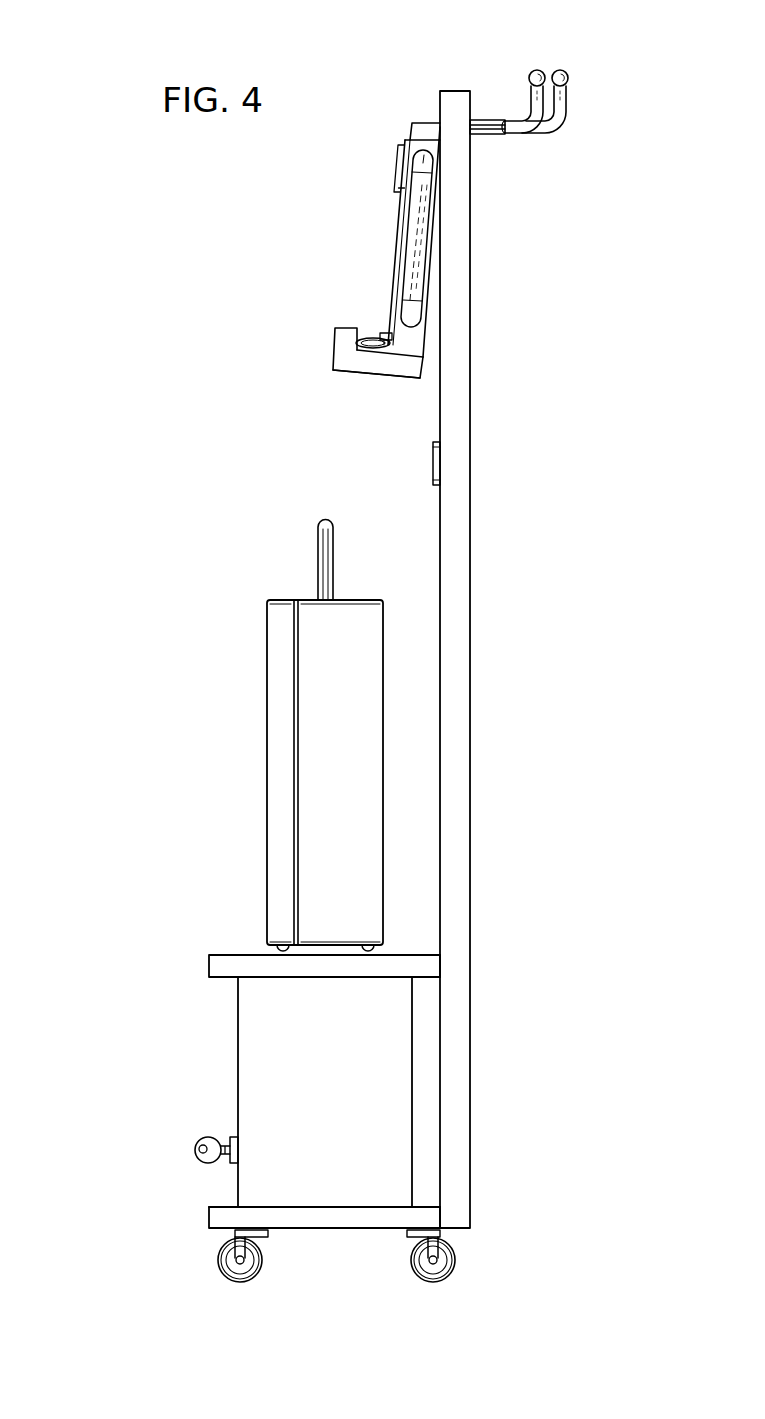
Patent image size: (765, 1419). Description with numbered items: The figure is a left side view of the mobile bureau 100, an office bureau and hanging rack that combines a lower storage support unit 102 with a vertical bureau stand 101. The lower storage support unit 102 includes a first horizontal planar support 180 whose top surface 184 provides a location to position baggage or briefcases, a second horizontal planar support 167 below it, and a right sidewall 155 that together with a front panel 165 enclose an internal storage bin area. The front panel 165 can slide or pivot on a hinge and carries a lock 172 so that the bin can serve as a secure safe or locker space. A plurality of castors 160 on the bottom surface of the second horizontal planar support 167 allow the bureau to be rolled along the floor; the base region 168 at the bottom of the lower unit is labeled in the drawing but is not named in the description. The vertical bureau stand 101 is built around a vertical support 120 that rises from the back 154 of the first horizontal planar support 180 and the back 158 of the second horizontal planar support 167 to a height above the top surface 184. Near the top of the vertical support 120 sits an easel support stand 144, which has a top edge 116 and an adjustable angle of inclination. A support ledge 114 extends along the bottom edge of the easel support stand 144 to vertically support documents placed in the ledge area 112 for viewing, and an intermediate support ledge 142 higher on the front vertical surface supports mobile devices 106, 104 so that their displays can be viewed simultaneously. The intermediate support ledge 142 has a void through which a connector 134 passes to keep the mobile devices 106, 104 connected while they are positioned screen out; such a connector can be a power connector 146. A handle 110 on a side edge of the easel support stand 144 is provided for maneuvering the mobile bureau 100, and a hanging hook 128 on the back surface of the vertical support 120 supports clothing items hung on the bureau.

The mobile bureau 100 is at (138, 370).
The vertical bureau stand 101 is at (303, 220).
The lower storage support unit 102 is at (170, 1095).
The mobile device 104 is at (395, 230).
The mobile device 106 is at (404, 168).
The handle 110 is at (408, 356).
The ledge area 112 is at (362, 336).
The support ledge 114 is at (345, 328).
The top edge 116 is at (427, 122).
The vertical support 120 is at (472, 230).
The hanging hook 128 is at (577, 44).
The connector 134 is at (388, 353).
The intermediate support ledge 142 is at (383, 333).
The easel support stand 144 is at (420, 137).
The power connector 146 is at (433, 466).
The back of first planar support 154 is at (443, 963).
The right sidewall 155 is at (343, 1107).
The back of second planar support 158 is at (443, 1218).
The castor 160 is at (217, 1262).
The front panel 165 is at (238, 1060).
The second horizontal planar support 167 is at (307, 1219).
The base 168 is at (209, 1218).
The lock 172 is at (232, 1138).
The first horizontal planar support 180 is at (305, 963).
The top surface 184 is at (228, 955).